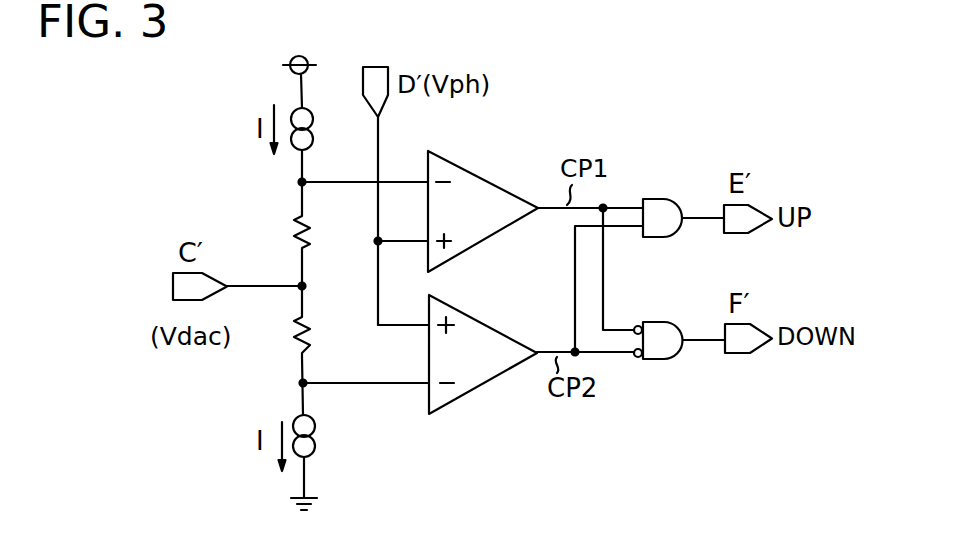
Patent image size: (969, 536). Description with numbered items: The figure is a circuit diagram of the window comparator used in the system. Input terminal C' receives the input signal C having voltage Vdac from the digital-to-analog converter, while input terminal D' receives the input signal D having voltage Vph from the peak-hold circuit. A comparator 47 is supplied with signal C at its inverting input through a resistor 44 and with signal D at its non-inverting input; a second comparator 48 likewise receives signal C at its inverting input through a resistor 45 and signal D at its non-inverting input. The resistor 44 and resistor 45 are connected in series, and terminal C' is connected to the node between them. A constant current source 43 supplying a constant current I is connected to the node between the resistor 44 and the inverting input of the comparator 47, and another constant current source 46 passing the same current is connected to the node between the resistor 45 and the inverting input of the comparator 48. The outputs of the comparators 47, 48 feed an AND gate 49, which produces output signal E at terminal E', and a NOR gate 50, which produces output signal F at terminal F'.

The constant current source 43 is at (316, 132).
The resistor 44 is at (295, 233).
The resistor 45 is at (297, 348).
The constant current source 46 is at (318, 440).
The comparator 47 is at (497, 183).
The comparator 48 is at (497, 328).
The AND gate 49 is at (672, 198).
The NOR gate 50 is at (670, 322).